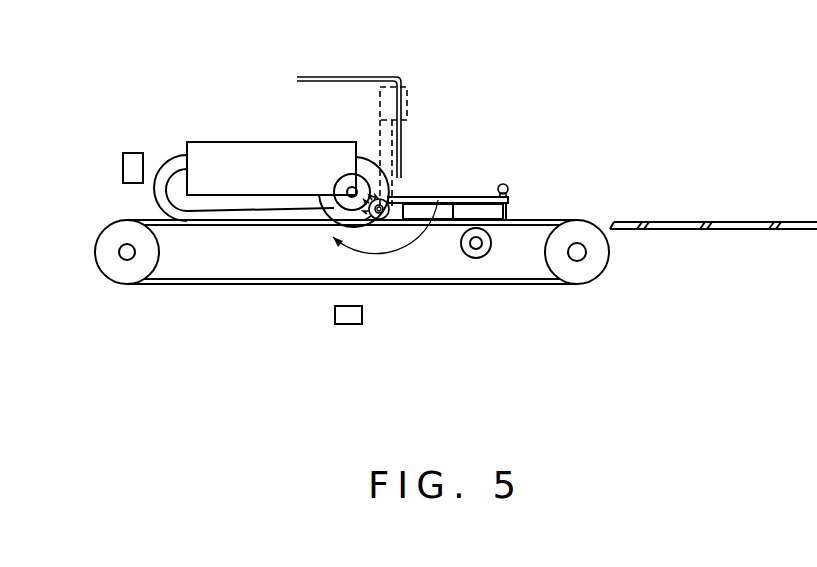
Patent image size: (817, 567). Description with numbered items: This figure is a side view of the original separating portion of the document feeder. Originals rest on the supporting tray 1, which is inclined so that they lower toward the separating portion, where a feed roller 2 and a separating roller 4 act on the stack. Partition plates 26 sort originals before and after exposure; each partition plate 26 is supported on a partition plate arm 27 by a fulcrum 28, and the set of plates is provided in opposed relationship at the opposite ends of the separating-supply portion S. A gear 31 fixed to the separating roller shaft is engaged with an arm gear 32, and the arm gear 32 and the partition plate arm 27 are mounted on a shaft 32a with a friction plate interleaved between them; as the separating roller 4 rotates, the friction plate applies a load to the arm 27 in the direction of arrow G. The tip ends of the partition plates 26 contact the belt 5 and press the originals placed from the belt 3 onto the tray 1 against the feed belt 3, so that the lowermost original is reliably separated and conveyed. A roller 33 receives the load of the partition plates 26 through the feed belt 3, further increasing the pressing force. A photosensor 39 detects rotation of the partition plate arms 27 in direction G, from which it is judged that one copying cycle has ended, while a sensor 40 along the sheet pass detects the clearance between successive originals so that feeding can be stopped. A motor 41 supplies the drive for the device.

The supporting tray 1 is at (797, 230).
The feed roller 2 is at (113, 273).
The feed belt 3 is at (282, 285).
The separating roller 4 is at (172, 162).
The belt 5 is at (223, 219).
The partition plate 26 is at (512, 213).
The partition plate arm 27 is at (450, 203).
The fulcrum 28 is at (507, 188).
The gear 31 is at (341, 180).
The arm gear 32 is at (393, 206).
The shaft 32a is at (379, 211).
The roller 33 is at (475, 258).
The photosensor 39 is at (348, 324).
The sensor 40 is at (122, 165).
The motor 41 is at (368, 158).
The direction of arrow G is at (385, 237).
The separating-supply portion S is at (418, 69).